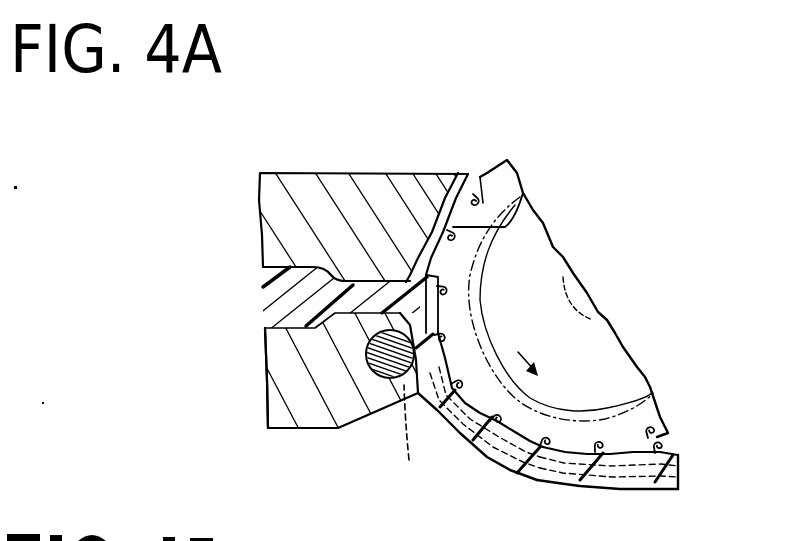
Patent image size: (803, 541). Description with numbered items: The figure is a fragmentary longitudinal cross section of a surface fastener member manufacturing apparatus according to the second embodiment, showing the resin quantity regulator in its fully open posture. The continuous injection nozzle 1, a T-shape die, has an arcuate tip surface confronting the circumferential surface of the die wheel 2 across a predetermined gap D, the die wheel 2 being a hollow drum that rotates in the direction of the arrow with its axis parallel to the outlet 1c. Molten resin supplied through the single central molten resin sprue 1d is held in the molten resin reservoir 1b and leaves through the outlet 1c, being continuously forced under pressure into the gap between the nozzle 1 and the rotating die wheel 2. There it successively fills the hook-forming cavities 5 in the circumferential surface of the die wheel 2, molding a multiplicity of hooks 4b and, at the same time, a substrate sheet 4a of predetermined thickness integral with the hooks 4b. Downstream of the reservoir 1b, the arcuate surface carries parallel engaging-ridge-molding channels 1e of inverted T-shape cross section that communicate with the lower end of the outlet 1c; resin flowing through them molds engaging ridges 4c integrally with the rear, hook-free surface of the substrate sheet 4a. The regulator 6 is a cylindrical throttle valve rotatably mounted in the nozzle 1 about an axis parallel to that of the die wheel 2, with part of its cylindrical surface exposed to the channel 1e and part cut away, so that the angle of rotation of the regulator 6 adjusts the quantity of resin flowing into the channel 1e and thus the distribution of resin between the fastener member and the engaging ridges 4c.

The continuous injection nozzle 1 is at (298, 180).
The molten resin reservoir 1b is at (406, 173).
The outlet 1c is at (341, 173).
The molten resin sprue 1d is at (298, 328).
The engaging-ridge-molding channel 1e is at (408, 439).
The die wheel 2 is at (543, 257).
The substrate sheet 4a is at (615, 458).
The hooks 4b is at (660, 442).
The engaging ridges 4c is at (535, 470).
The hook-forming cavities 5 is at (510, 240).
The regulator 6 is at (372, 380).
The gap D is at (459, 173).